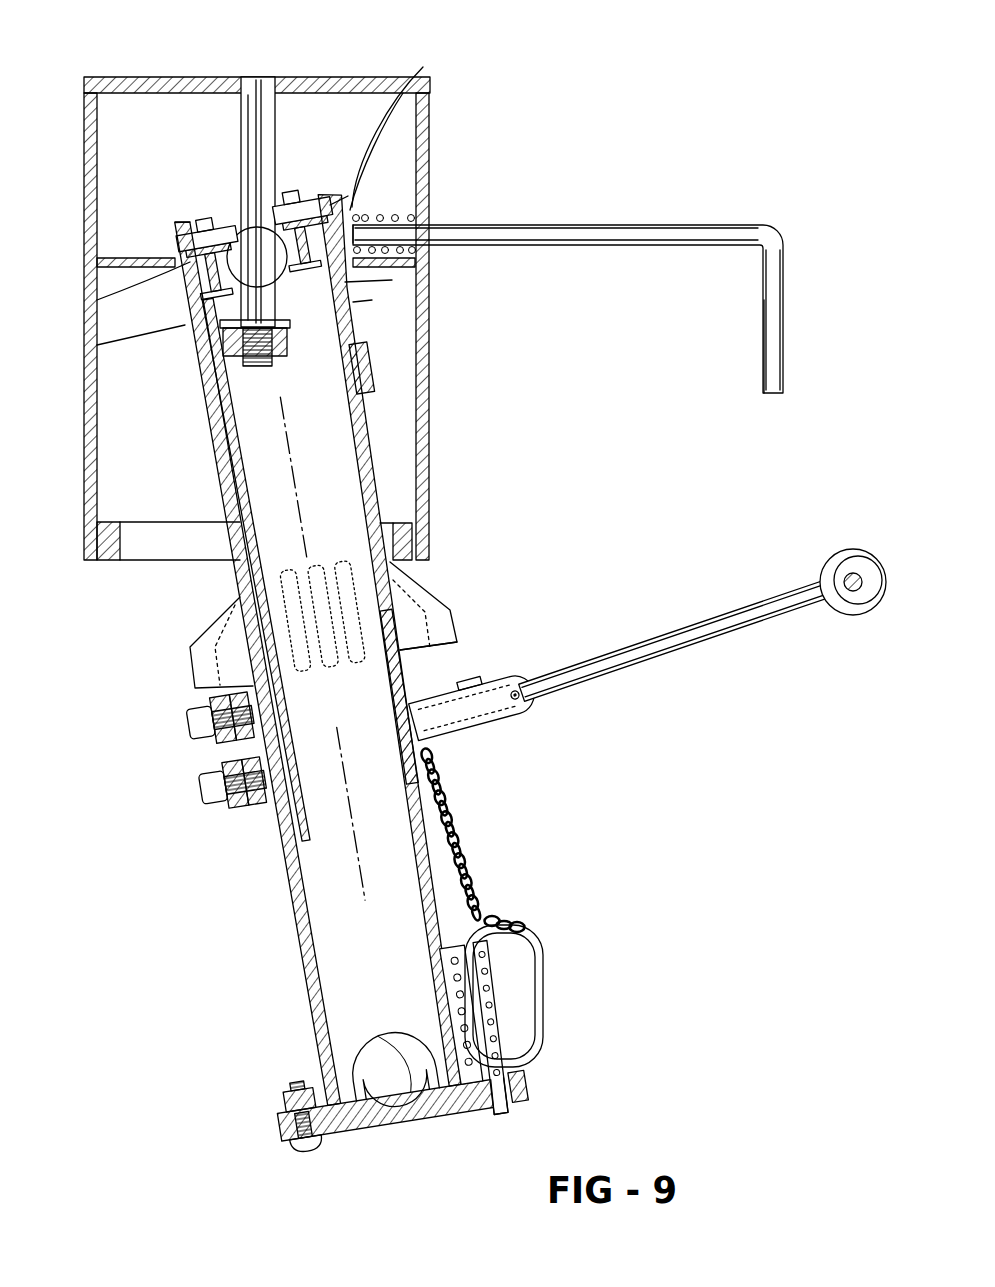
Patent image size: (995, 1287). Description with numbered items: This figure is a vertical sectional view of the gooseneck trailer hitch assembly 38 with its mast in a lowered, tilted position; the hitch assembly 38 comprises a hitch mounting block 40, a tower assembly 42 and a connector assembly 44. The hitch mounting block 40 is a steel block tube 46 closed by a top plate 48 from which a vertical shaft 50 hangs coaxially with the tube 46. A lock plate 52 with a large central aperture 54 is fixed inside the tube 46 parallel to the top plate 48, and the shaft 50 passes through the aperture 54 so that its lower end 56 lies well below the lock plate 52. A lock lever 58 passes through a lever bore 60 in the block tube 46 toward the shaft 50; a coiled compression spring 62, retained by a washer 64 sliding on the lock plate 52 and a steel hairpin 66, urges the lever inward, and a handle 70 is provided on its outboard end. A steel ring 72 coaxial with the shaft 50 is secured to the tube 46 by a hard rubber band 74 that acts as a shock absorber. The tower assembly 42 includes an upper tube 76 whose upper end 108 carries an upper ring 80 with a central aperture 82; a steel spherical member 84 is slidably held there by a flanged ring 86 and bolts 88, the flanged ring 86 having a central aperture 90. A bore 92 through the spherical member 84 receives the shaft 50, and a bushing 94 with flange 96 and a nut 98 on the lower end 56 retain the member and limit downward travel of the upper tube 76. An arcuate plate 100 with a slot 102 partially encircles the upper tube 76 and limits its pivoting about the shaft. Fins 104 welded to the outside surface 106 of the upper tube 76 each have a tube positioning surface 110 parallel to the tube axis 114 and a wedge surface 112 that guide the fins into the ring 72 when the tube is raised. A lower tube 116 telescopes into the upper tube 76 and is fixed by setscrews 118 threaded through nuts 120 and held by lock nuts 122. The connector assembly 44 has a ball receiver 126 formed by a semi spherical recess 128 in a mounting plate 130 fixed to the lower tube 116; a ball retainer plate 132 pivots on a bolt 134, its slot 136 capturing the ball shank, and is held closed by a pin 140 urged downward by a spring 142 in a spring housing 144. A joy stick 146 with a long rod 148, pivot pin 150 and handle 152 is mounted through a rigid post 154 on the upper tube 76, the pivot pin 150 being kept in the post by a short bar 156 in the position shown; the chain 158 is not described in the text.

The gooseneck trailer hitch assembly 38 is at (605, 130).
The hitch mounting block 40 is at (450, 170).
The tower assembly 42 is at (188, 766).
The connector assembly 44 is at (287, 1042).
The steel block tube 46 is at (430, 458).
The top plate 48 is at (140, 77).
The vertical shaft 50 is at (275, 110).
The lock plate 52 is at (112, 258).
The central aperture 54 is at (180, 263).
The lower end 56 is at (205, 384).
The lock lever 58 is at (632, 225).
The lever bore 60 is at (445, 225).
The coiled compression spring 62 is at (400, 218).
The washer 64 is at (399, 131).
The steel hairpin 66 is at (345, 200).
The handle 70 is at (784, 310).
The steel ring 72 is at (158, 545).
The hard rubber band 74 is at (103, 558).
The upper tube 76 is at (373, 415).
The upper ring 80 is at (305, 198).
The central aperture 82 is at (228, 213).
The steel spherical member 84 is at (222, 215).
The flanged ring 86 is at (205, 292).
The bolts 88 is at (173, 217).
The central aperture 90 is at (355, 280).
The bore 92 is at (256, 77).
The bushing 94 is at (240, 308).
The flange 96 is at (232, 330).
The nut 98 is at (262, 362).
The arcuate plate 100 is at (355, 302).
The slot 102 is at (362, 333).
The fins 104 is at (445, 628).
The outside surface 106 is at (228, 572).
The upper end 108 is at (184, 222).
The tube positioning surface 110 is at (452, 613).
The wedge surface 112 is at (430, 583).
The tube axis 114 is at (352, 832).
The lower tube 116 is at (307, 958).
The setscrews 118 is at (188, 722).
The nuts 120 is at (268, 810).
The lock nuts 122 is at (238, 803).
The ball receiver 126 is at (352, 1072).
The semi spherical recess 128 is at (418, 1105).
The mounting plate 130 is at (282, 1120).
The ball retainer plate 132 is at (528, 1097).
The bolt 134 is at (287, 1092).
The slot 136 is at (422, 1108).
The pin 140 is at (505, 1107).
The spring 142 is at (493, 1010).
The spring housing 144 is at (507, 1025).
The joy stick 146 is at (722, 640).
The long rod 148 is at (692, 645).
The pivot pin 150 is at (518, 700).
The handle 152 is at (835, 560).
The rigid post 154 is at (478, 720).
The short bar 156 is at (473, 682).
The chain 158 is at (472, 857).